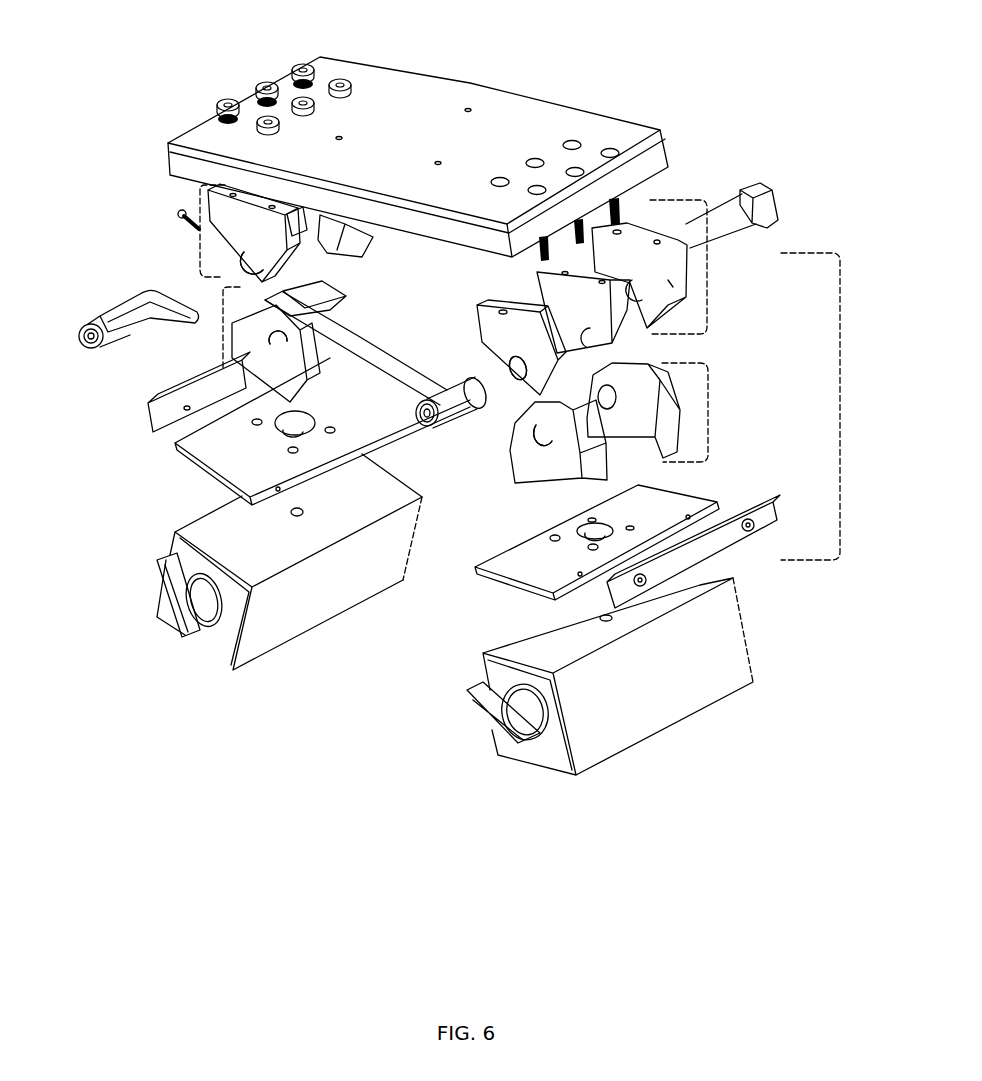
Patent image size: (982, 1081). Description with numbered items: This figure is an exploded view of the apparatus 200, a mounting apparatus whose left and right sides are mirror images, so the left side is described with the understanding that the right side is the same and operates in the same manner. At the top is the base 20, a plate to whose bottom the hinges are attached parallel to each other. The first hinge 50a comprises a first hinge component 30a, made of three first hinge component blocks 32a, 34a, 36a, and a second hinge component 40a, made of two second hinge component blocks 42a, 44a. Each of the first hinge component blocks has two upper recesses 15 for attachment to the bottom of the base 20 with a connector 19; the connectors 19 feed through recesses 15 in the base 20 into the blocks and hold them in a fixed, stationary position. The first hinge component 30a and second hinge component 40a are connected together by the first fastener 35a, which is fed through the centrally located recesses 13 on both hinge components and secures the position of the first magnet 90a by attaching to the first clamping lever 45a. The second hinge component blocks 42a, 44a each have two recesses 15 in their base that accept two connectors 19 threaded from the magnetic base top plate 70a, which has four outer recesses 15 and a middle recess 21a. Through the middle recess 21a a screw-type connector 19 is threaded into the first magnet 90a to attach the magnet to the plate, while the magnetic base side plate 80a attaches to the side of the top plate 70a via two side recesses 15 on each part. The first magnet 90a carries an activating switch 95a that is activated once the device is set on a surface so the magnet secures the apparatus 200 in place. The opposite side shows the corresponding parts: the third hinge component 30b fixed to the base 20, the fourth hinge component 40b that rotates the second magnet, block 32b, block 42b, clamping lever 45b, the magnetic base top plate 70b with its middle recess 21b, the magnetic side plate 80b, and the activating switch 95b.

The apparatus 200 is at (464, 53).
The base plate 20 is at (660, 130).
The connector 19 is at (223, 97).
The recesses 15 is at (575, 140).
The centrally located recess 13 is at (542, 432).
The first hinge component 30a is at (707, 295).
The third hinge component 30b is at (192, 240).
The first hinge component block 32a is at (521, 347).
The clamp block 32b is at (254, 233).
The first hinge component block 34a is at (583, 313).
The first hinge component block 36a is at (639, 275).
The first fastener 35a is at (775, 185).
The second hinge component 40a is at (720, 408).
The fourth hinge component 40b is at (222, 348).
The second hinge component block 42a is at (558, 441).
The pivot block 42b is at (276, 353).
The second hinge component block 44a is at (633, 410).
The first clamping lever 45a is at (450, 422).
The handle 45b is at (112, 303).
The first hinge 50a is at (833, 406).
The magnetic base top plate 70a is at (677, 502).
The magnetic base top plate 70b is at (203, 468).
The middle recess 21a is at (590, 528).
The aperture 21b is at (278, 432).
The magnetic base side plate 80a is at (776, 518).
The magnetic side plate 80b is at (148, 400).
The first magnet 90a is at (722, 635).
The activating switch 95a is at (490, 713).
The activating switch 95b is at (192, 608).